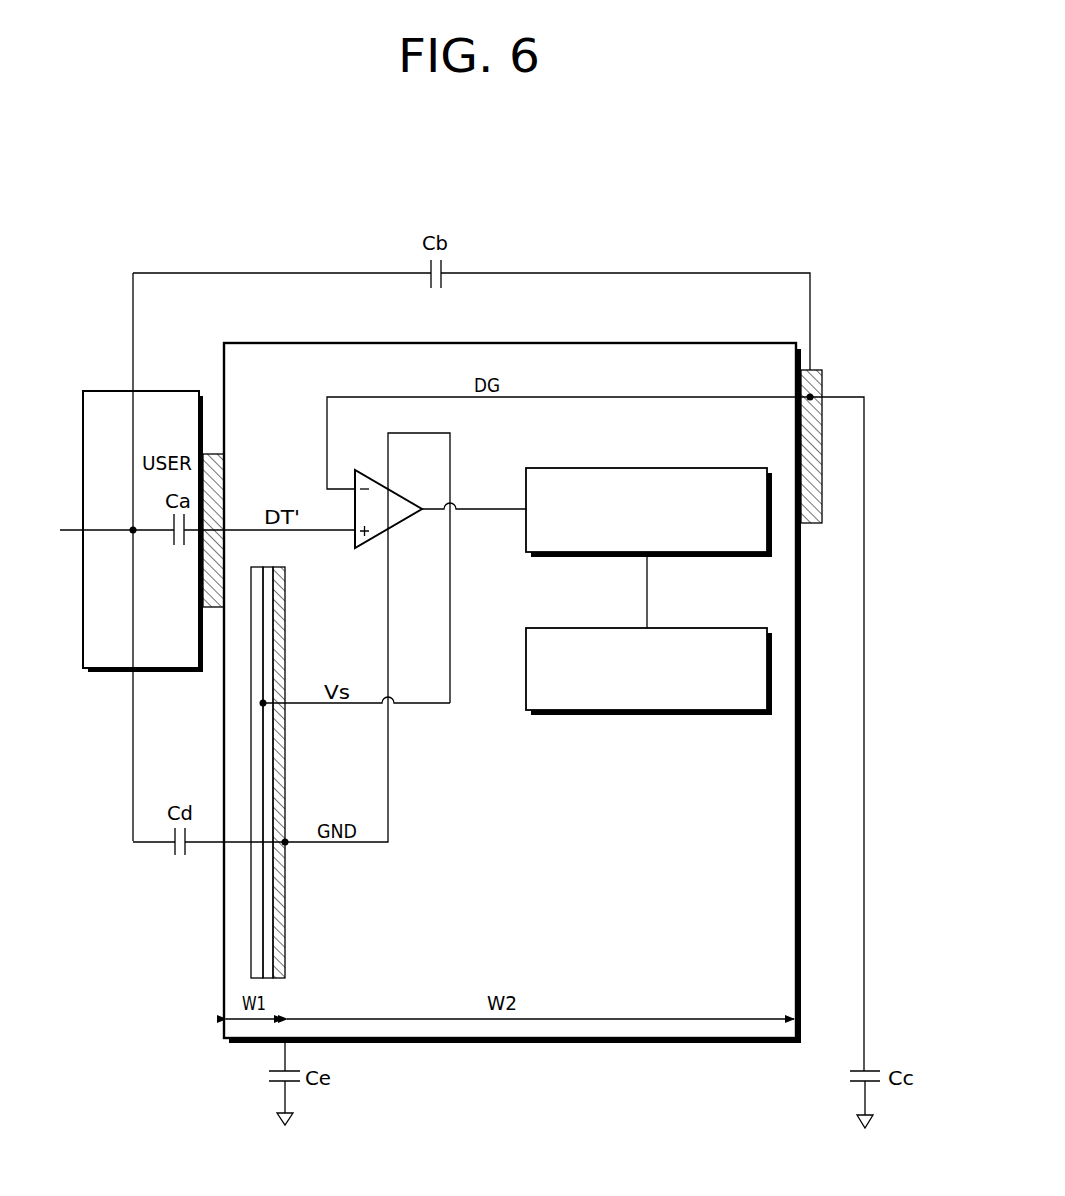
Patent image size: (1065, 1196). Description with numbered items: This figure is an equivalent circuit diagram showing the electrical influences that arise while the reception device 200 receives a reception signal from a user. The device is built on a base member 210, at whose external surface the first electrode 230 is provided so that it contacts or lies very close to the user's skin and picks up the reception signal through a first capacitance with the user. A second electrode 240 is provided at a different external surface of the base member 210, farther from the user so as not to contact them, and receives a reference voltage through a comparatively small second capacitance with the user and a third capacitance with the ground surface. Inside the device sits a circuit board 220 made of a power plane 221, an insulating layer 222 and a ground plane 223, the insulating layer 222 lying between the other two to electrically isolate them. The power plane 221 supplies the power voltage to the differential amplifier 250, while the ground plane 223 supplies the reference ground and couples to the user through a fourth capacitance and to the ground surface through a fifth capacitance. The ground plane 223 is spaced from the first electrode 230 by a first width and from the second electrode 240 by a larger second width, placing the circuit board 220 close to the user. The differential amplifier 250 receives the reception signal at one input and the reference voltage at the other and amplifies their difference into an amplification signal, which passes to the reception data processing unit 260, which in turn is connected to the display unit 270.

The reception device 200 is at (755, 206).
The base member 210 is at (740, 343).
The circuit board 220 is at (187, 772).
The power plane 221 is at (257, 890).
The insulating layer 222 is at (268, 922).
The ground plane 223 is at (277, 950).
The first electrode 230 is at (224, 460).
The second electrode 240 is at (812, 523).
The differential amplifier 250 is at (403, 522).
The reception data processing unit 260 is at (717, 468).
The display unit 270 is at (717, 628).